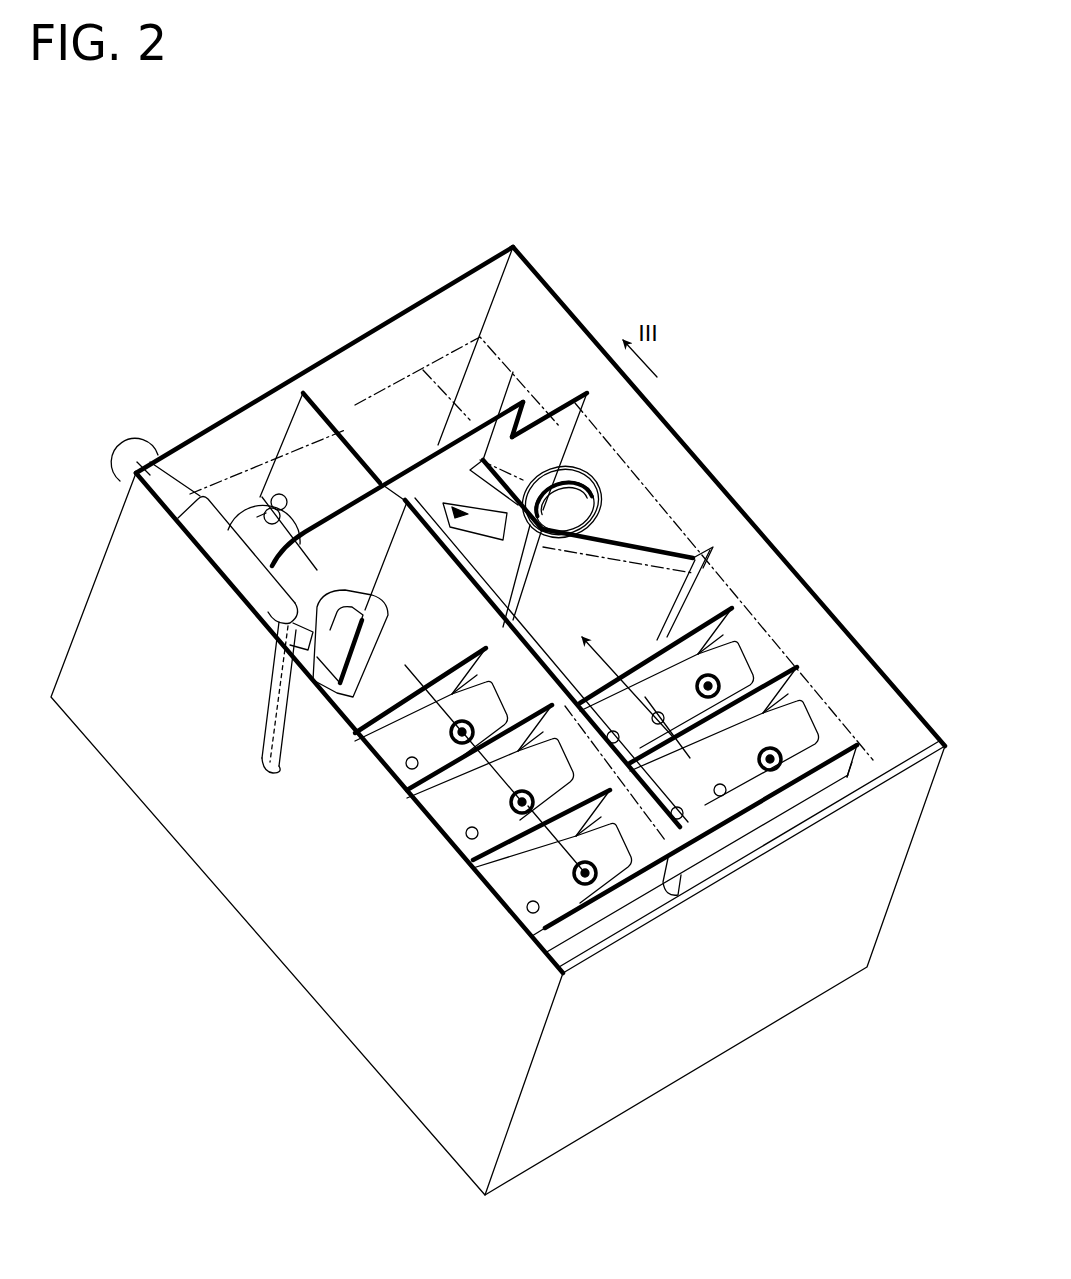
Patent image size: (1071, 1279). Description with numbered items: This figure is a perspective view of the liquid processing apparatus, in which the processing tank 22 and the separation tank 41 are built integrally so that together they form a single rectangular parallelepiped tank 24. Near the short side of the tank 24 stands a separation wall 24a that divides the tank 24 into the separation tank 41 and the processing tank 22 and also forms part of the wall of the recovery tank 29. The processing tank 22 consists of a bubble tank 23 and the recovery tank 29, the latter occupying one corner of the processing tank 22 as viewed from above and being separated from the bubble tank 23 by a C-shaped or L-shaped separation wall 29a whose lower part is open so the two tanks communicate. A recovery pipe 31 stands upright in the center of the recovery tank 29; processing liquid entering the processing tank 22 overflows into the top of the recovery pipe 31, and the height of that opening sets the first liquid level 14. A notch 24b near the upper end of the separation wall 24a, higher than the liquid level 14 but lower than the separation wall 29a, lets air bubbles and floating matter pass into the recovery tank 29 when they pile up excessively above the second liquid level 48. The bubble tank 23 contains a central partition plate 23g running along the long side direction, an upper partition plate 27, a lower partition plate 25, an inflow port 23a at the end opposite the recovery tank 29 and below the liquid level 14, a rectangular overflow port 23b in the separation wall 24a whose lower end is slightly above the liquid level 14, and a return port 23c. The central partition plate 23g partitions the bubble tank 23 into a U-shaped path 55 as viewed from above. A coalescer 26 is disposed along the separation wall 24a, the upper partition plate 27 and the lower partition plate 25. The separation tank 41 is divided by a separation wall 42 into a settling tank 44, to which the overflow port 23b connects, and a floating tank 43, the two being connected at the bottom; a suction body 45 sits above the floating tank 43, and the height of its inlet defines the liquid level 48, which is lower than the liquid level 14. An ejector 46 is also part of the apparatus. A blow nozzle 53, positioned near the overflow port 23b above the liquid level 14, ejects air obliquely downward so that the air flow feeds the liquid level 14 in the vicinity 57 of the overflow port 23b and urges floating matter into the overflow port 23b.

The liquid level 14 is at (874, 746).
The processing tank 22 is at (750, 521).
The bubble tank 23 is at (797, 576).
The inflow port 23a is at (265, 760).
The overflow port 23b is at (423, 480).
The return port 23c is at (280, 707).
The central partition plate 23g is at (523, 637).
The tank 24 is at (862, 422).
The separation wall 24a is at (514, 372).
The notch 24b is at (588, 392).
The lower partition plate 25 is at (440, 673).
The coalescer 26 is at (383, 747).
The upper partition plate 27 is at (798, 673).
The recovery tank 29 is at (655, 548).
The separation wall 29a is at (690, 545).
The recovery pipe 31 is at (606, 455).
The separation tank 41 is at (531, 281).
The separation wall 42 is at (323, 413).
The floating tank 43 is at (227, 460).
The settling tank 44 is at (387, 335).
The suction body 45 is at (245, 492).
The ejector 46 is at (237, 577).
The liquid level 48 is at (452, 355).
The blow nozzle 53 is at (510, 480).
The U-shaped path 55 is at (612, 670).
The vicinity of the overflow port 57 is at (452, 522).